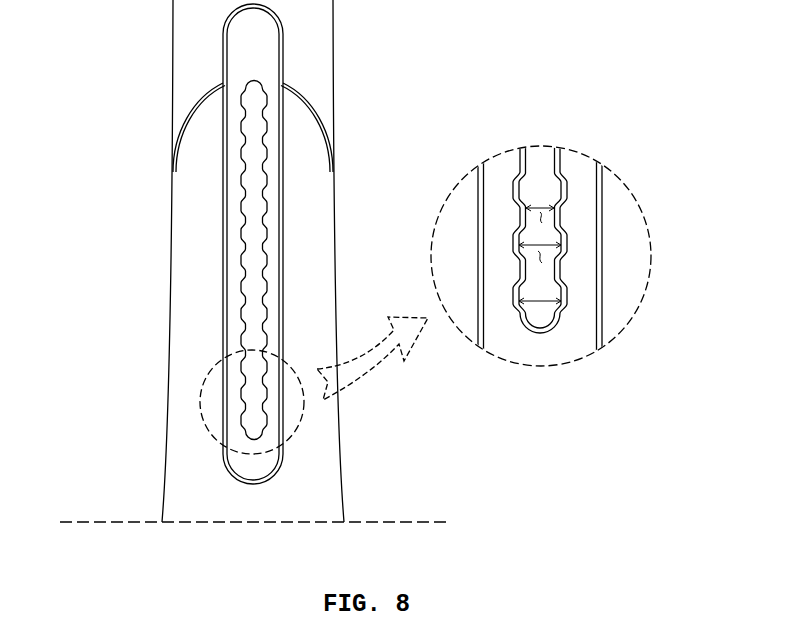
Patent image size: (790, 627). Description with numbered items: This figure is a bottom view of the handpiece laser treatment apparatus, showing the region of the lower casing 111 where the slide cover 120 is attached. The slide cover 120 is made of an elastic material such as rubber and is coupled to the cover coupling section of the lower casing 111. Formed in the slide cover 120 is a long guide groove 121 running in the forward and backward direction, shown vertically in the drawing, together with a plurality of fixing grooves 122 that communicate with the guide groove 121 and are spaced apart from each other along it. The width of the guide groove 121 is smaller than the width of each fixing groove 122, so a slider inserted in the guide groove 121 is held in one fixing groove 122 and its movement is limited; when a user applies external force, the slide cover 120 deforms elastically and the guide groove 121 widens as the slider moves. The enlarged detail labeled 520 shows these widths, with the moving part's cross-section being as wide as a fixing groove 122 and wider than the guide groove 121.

The lower casing 111 is at (185, 248).
The slide cover 120 is at (265, 55).
The guide groove 121 is at (552, 222).
The fixing groove 122 is at (563, 278).
The serrated rod 520 is at (537, 334).